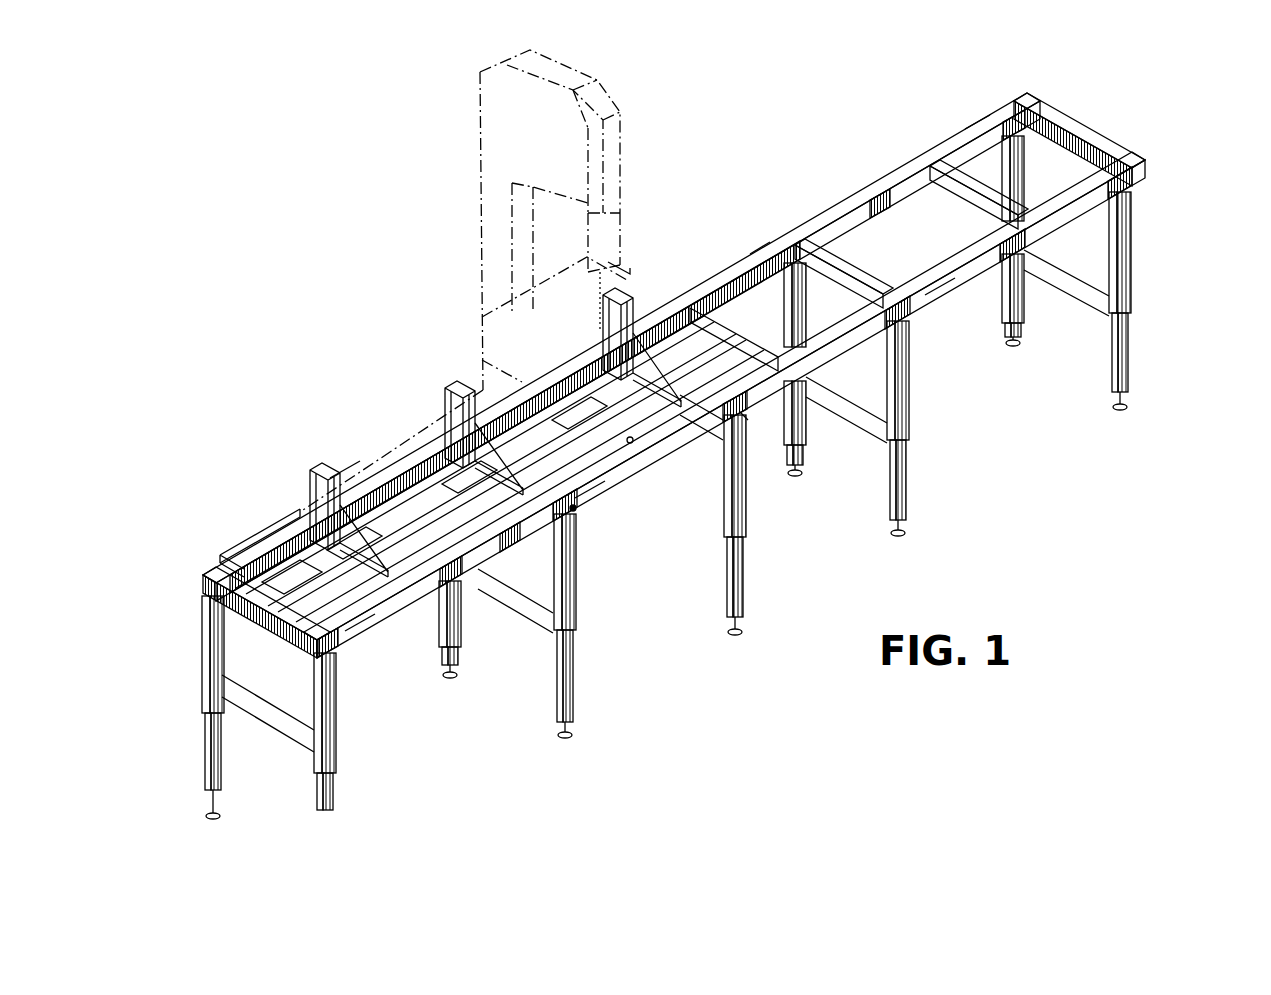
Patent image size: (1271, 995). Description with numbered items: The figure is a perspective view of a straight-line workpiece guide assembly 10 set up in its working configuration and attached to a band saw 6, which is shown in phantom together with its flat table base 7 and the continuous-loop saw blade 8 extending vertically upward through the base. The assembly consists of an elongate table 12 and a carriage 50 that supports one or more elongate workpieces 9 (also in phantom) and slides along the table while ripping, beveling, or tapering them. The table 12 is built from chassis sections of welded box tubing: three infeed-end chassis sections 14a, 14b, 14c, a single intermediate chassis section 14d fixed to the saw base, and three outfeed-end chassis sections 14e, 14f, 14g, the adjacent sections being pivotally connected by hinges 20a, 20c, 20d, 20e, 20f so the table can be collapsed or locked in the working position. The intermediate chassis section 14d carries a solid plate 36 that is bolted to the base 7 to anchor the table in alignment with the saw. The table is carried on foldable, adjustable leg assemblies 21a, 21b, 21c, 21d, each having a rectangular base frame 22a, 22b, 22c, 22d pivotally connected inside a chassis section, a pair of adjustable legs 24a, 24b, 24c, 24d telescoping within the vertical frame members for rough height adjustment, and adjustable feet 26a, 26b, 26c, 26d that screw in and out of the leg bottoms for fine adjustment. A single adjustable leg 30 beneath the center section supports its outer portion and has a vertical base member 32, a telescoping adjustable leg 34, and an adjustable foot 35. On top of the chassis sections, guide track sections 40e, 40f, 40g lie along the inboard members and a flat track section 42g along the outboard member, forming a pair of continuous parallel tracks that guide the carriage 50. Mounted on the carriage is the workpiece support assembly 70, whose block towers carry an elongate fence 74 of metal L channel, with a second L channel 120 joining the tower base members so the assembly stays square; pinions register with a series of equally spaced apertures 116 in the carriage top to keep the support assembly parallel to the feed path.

The band saw 6 is at (490, 137).
The table base 7 is at (508, 327).
The saw blade 8 is at (632, 266).
The workpiece 9 is at (347, 477).
The workpiece guide assembly 10 is at (1073, 503).
The elongate table 12 is at (880, 163).
The chassis section 14a is at (360, 636).
The chassis section 14b is at (473, 560).
The chassis section 14c is at (592, 500).
The intermediate chassis section 14d is at (748, 420).
The chassis section 14e is at (760, 235).
The chassis section 14f is at (942, 298).
The chassis section 14g is at (977, 135).
The hinge 20a is at (432, 596).
The hinge 20c is at (665, 455).
The hinge 20d is at (806, 387).
The hinge 20e is at (838, 225).
The hinge 20f is at (1027, 268).
The leg assembly 21a is at (369, 732).
The leg assembly 21b is at (612, 618).
The leg assembly 21c is at (945, 420).
The leg assembly 21d is at (1179, 292).
The base frame 22a is at (342, 740).
The base frame 22b is at (578, 570).
The base frame 22c is at (912, 420).
The base frame 22d is at (1131, 226).
The adjustable leg 24a is at (342, 790).
The adjustable leg 24b is at (578, 670).
The adjustable leg 24c is at (912, 490).
The adjustable leg 24d is at (1131, 326).
The adjustable foot 26a is at (223, 817).
The adjustable foot 26b is at (456, 672).
The adjustable foot 26c is at (802, 472).
The adjustable foot 26d is at (1022, 347).
The single adjustable leg 30 is at (771, 532).
The base member 32 is at (746, 530).
The adjustable leg 34 is at (746, 594).
The adjustable foot 35 is at (746, 634).
The solid plate 36 is at (712, 338).
The guide track section 40e is at (740, 255).
The guide track section 40f is at (897, 158).
The guide track section 40g is at (1032, 92).
The flat track section 42g is at (1150, 170).
The carriage 50 is at (392, 497).
The workpiece support assembly 70 is at (306, 476).
The elongate fence 74 is at (413, 482).
The apertures 116 is at (288, 551).
The second L channel 120 is at (630, 440).